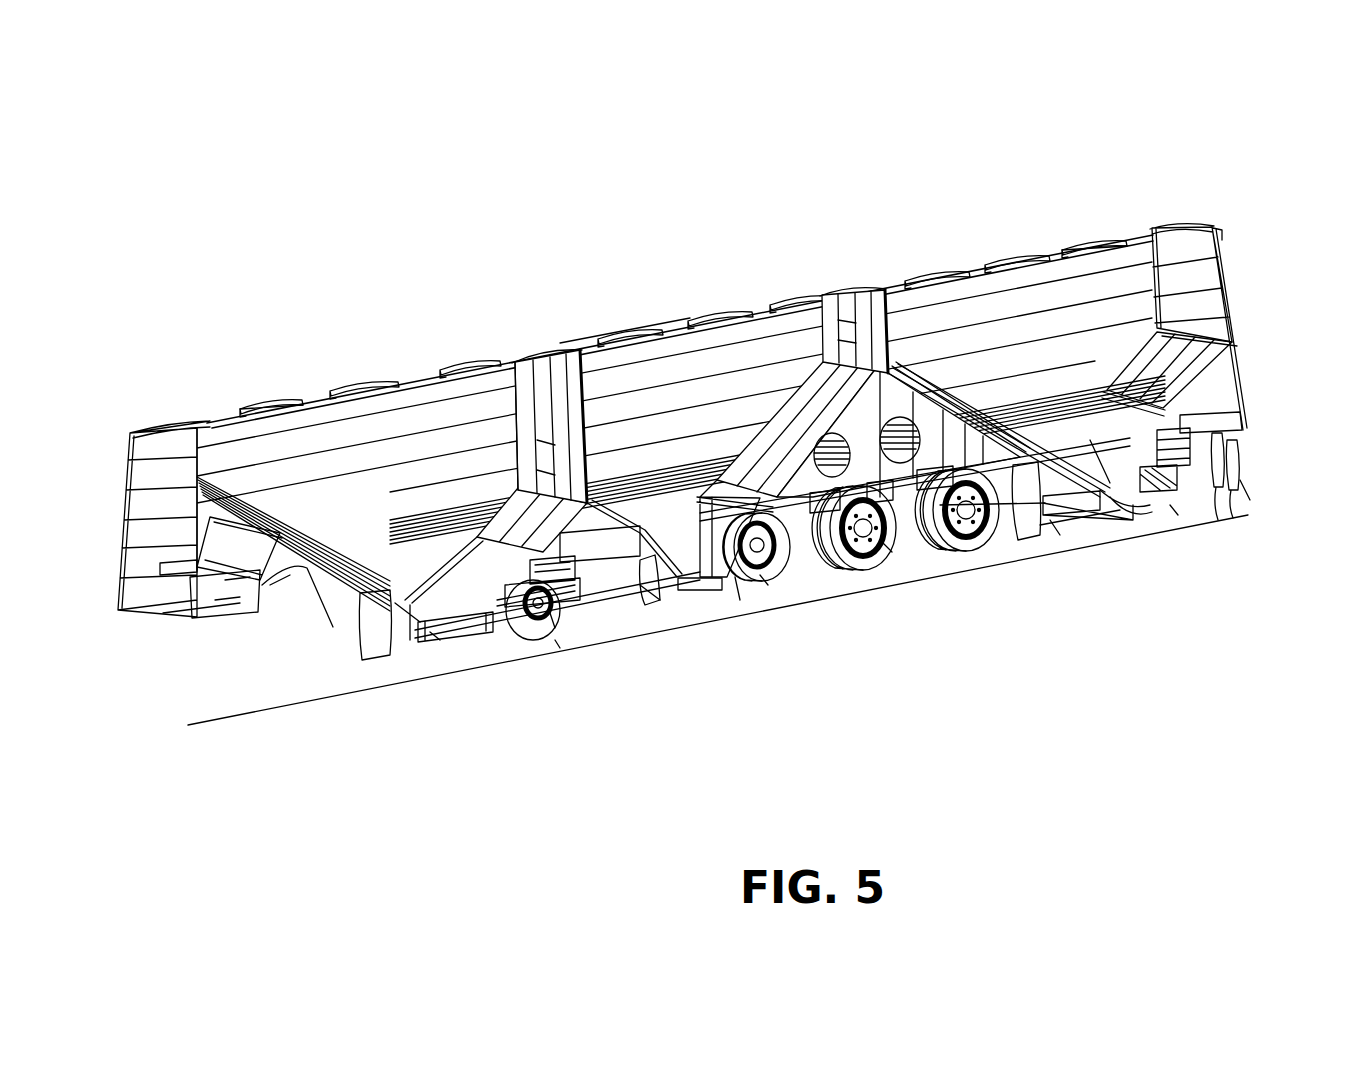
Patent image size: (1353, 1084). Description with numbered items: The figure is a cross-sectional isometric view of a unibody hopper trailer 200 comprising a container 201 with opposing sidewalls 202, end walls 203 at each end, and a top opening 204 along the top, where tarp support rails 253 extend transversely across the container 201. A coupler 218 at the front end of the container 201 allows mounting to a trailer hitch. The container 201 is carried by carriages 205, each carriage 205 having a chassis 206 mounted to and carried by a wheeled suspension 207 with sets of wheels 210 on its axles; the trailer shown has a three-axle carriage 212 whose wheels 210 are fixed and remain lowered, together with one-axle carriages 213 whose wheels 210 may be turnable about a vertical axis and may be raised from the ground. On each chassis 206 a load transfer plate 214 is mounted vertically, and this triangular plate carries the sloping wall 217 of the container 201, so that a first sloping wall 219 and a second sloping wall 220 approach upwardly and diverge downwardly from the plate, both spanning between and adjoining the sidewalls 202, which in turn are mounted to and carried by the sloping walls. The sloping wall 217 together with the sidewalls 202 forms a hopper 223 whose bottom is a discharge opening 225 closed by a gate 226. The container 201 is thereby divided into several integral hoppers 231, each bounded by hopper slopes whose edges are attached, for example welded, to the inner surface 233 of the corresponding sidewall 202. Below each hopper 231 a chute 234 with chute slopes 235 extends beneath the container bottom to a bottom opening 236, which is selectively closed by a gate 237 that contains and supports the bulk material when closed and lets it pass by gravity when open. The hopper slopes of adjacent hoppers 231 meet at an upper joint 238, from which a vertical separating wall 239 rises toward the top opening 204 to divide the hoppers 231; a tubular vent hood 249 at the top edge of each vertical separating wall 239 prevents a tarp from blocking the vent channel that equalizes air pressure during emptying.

The unibody hopper trailer 200 is at (313, 158).
The container 201 is at (229, 410).
The sidewalls 202 is at (318, 366).
The end walls 203 is at (147, 475).
The top opening 204 is at (658, 312).
The carriage 205 is at (650, 583).
The chassis 206 is at (556, 629).
The wheeled suspension 207 is at (596, 609).
The wheels 210 is at (525, 628).
The three-axle carriage 212 is at (1056, 601).
The one-axle carriage 213 is at (965, 619).
The load transfer plate 214 is at (591, 595).
The sloping wall 217 is at (827, 393).
The coupler 218 is at (223, 623).
The first sloping wall 219 is at (657, 457).
The second sloping wall 220 is at (866, 417).
The hopper 223 is at (352, 336).
The discharge opening 225 is at (382, 550).
The gate 226 is at (462, 648).
The integral hopper 231 is at (698, 265).
The inner surface 233 is at (507, 385).
The chute 234 is at (417, 612).
The chute slopes 235 is at (481, 597).
The bottom opening 236 is at (433, 640).
The gate 237 is at (810, 676).
The upper joint 238 is at (522, 480).
The vertical separating wall 239 is at (543, 440).
The tubular vent hood 249 is at (544, 352).
The tarp support rails 253 is at (929, 270).